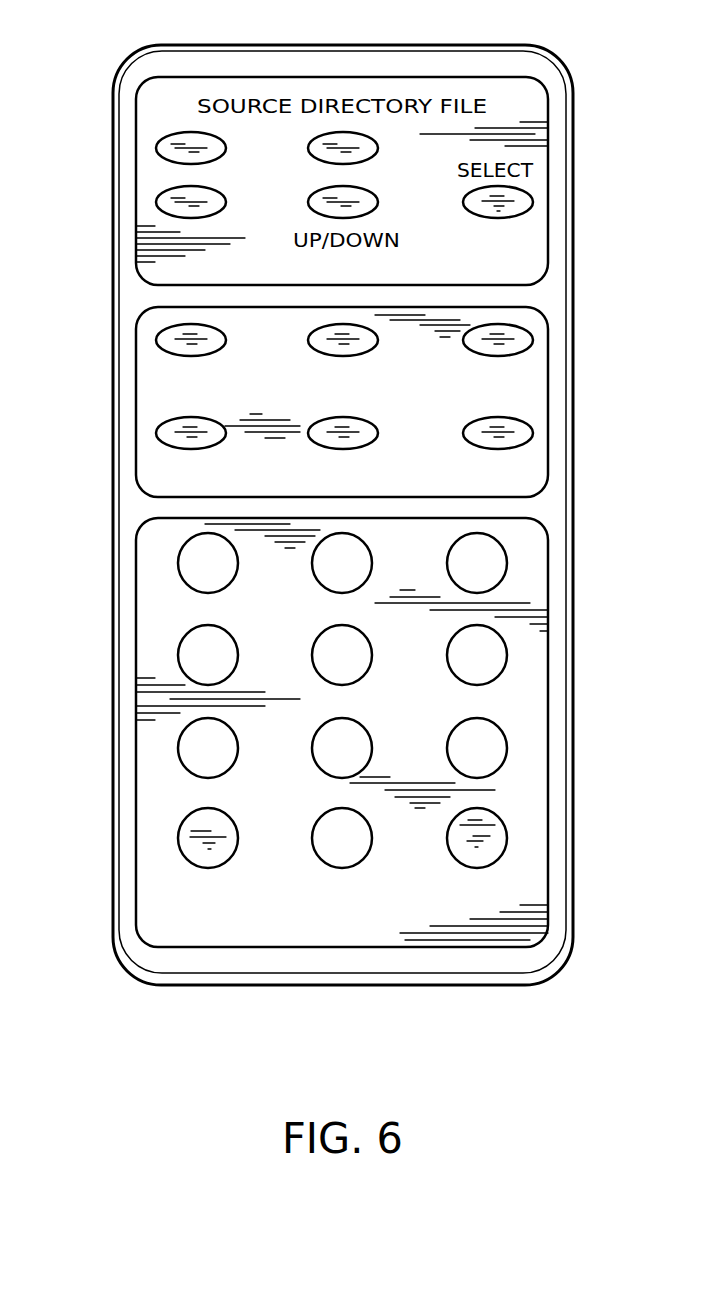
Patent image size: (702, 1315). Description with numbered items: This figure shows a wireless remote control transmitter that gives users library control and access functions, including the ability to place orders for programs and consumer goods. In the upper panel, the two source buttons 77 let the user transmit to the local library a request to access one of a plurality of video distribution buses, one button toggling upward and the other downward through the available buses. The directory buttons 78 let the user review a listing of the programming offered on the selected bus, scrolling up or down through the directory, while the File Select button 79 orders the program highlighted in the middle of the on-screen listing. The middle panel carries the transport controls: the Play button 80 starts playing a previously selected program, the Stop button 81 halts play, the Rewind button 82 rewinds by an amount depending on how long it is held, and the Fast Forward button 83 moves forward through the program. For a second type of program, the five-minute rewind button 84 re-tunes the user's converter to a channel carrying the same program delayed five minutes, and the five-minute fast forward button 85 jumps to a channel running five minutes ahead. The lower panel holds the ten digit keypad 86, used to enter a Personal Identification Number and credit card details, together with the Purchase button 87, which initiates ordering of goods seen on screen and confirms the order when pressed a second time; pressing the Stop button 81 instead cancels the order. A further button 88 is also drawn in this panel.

The source button 77 is at (156, 147).
The directory buttons 78 is at (345, 78).
The File Select button 79 is at (533, 202).
The Play button 80 is at (317, 354).
The Stop button 81 is at (363, 418).
The Rewind button 82 is at (157, 336).
The Fast Forward button 83 is at (532, 336).
The Rewind 5 min. button 84 is at (156, 433).
The Fast Forward 5 min. button 85 is at (533, 433).
The ten digit keypad 86 is at (136, 577).
The Purchase button 87 is at (178, 839).
The PIN button 88 is at (507, 838).